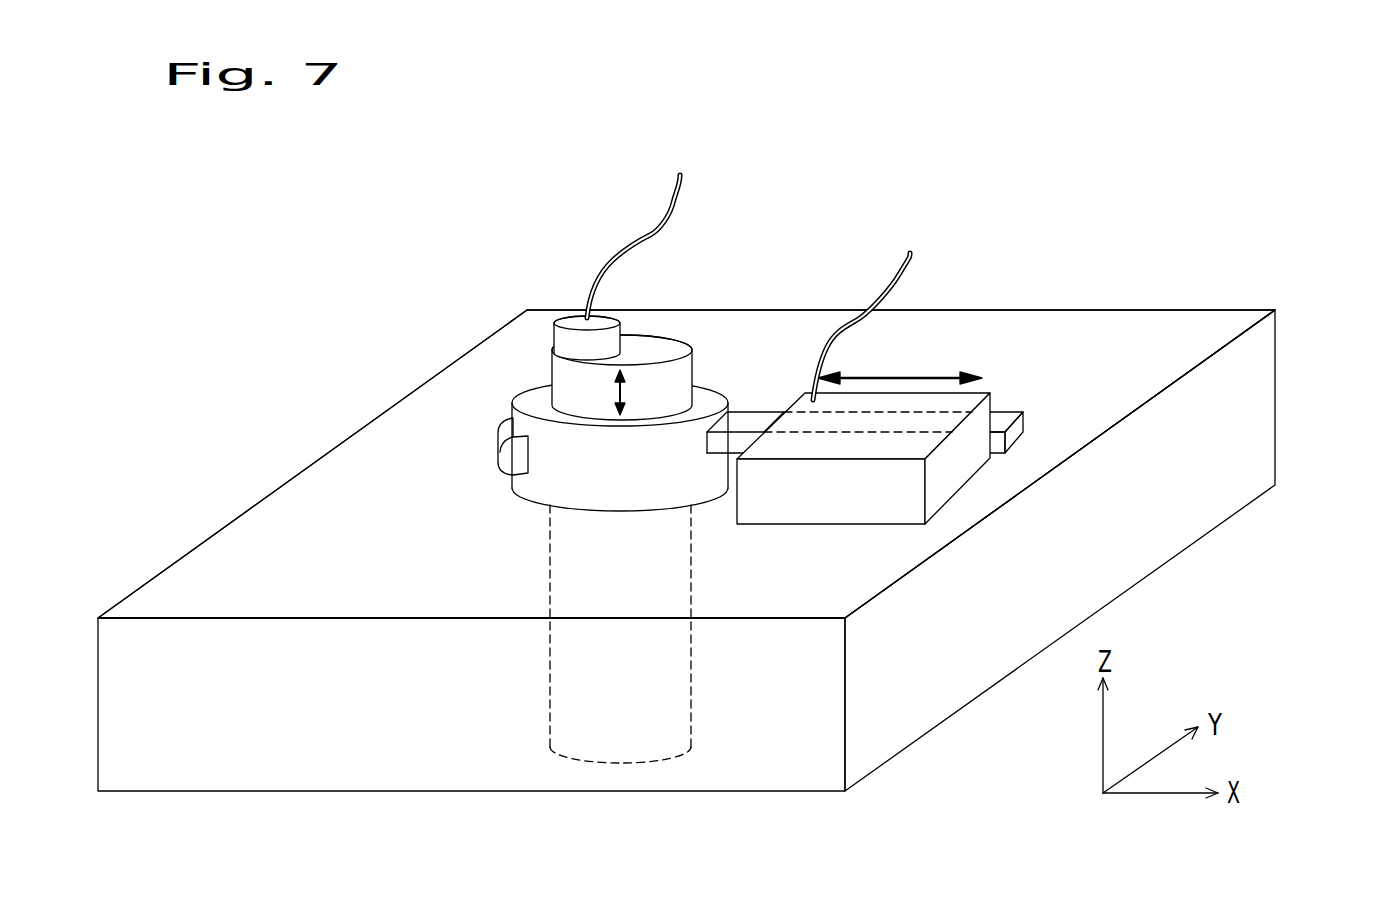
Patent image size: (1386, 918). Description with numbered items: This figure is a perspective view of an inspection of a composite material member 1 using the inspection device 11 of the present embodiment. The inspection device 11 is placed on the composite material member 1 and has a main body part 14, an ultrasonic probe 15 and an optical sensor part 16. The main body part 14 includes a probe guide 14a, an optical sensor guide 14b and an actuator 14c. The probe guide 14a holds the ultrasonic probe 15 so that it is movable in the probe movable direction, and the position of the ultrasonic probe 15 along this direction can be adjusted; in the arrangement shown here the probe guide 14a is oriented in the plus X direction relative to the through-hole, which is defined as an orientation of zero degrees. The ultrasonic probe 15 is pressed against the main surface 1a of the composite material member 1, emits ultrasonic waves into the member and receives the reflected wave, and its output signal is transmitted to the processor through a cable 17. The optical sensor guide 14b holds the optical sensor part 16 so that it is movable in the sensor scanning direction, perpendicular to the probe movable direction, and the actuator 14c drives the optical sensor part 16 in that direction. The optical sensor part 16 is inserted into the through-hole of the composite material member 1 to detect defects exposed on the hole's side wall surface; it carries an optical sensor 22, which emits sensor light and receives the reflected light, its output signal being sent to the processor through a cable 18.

The composite material member 1 is at (1127, 318).
The main surface 1a is at (962, 327).
The inspection device 11 is at (535, 345).
The main body part 14 is at (721, 411).
The probe guide 14a is at (1003, 420).
The optical sensor guide 14b is at (513, 400).
The actuator 14c is at (508, 458).
The ultrasonic probe 15 is at (877, 507).
The optical sensor part 16 is at (565, 695).
The cable 17 is at (907, 253).
The cable 18 is at (632, 230).
The optical sensor 22 is at (568, 320).